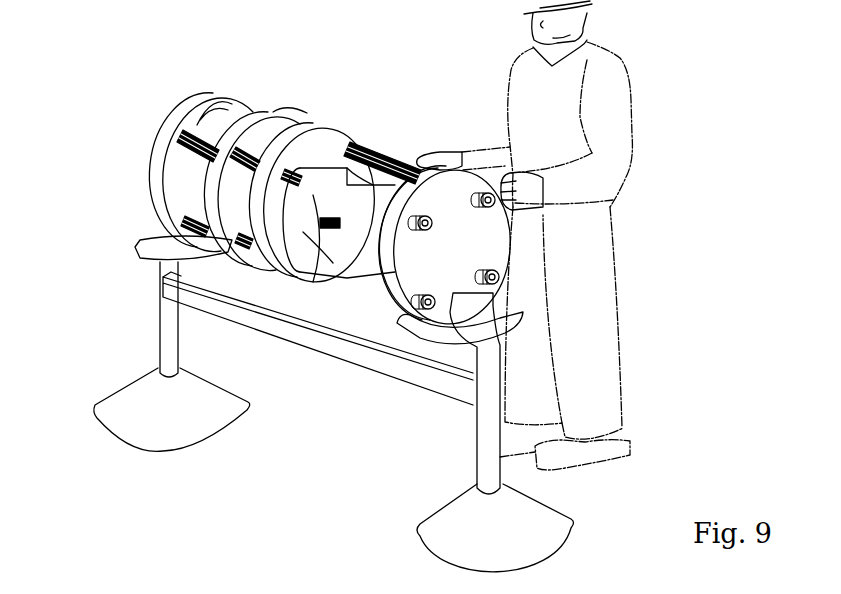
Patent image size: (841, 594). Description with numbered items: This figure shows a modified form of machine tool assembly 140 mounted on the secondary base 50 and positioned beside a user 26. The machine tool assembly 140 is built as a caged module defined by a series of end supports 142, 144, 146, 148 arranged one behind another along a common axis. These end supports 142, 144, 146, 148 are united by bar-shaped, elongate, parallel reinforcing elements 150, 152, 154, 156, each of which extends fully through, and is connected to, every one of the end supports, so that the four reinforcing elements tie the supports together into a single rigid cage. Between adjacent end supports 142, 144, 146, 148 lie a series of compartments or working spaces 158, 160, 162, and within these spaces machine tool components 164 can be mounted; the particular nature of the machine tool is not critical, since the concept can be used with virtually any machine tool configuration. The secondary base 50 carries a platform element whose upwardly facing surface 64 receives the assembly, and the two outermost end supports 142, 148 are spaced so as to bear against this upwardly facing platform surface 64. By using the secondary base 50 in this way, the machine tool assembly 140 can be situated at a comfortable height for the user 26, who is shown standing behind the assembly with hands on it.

The user 26 is at (620, 43).
The secondary base 50 is at (285, 458).
The upwardly facing surface 64 is at (150, 243).
The machine tool assembly 140 is at (356, 203).
The end support 142 is at (172, 128).
The end support 144 is at (233, 130).
The end support 146 is at (298, 133).
The end support 148 is at (420, 183).
The reinforcing element 150 is at (432, 230).
The reinforcing element 152 is at (497, 206).
The reinforcing element 154 is at (430, 293).
The reinforcing element 156 is at (503, 287).
The compartment/working space 158 is at (195, 127).
The compartment/working space 160 is at (272, 130).
The compartment/working space 162 is at (387, 143).
The machine tool component 164 is at (332, 272).